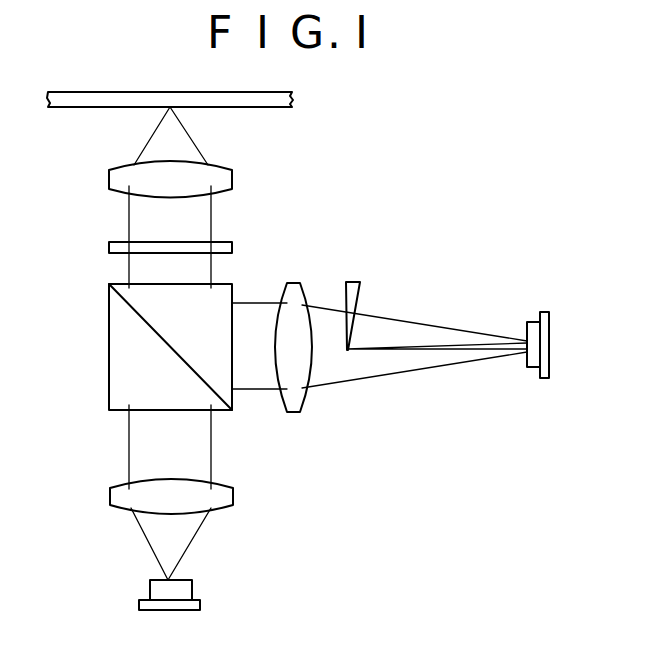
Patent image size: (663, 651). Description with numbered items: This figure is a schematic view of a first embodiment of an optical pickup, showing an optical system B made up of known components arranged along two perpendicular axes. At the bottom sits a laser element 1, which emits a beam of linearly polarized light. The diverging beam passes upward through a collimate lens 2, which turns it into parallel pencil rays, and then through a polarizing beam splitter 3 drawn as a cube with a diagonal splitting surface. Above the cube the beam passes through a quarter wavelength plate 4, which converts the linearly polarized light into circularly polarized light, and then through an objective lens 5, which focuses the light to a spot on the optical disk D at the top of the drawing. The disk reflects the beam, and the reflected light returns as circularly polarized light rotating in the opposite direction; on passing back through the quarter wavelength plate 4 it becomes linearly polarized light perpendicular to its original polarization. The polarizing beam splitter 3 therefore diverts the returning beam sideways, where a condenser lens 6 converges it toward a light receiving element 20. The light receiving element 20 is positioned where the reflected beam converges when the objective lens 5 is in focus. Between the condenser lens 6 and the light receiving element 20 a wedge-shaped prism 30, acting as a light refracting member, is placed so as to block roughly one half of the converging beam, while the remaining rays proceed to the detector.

The laser element 1 is at (150, 594).
The collimate lens 2 is at (110, 497).
The polarizing beam splitter 3 is at (109, 340).
The quarter wavelength plate 4 is at (109, 250).
The objective lens 5 is at (109, 179).
The condenser lens 6 is at (289, 284).
The light receiving element 20 is at (534, 322).
The wedge-shaped prism 30 is at (352, 282).
The optical disk D is at (62, 109).
The optical system B is at (247, 428).